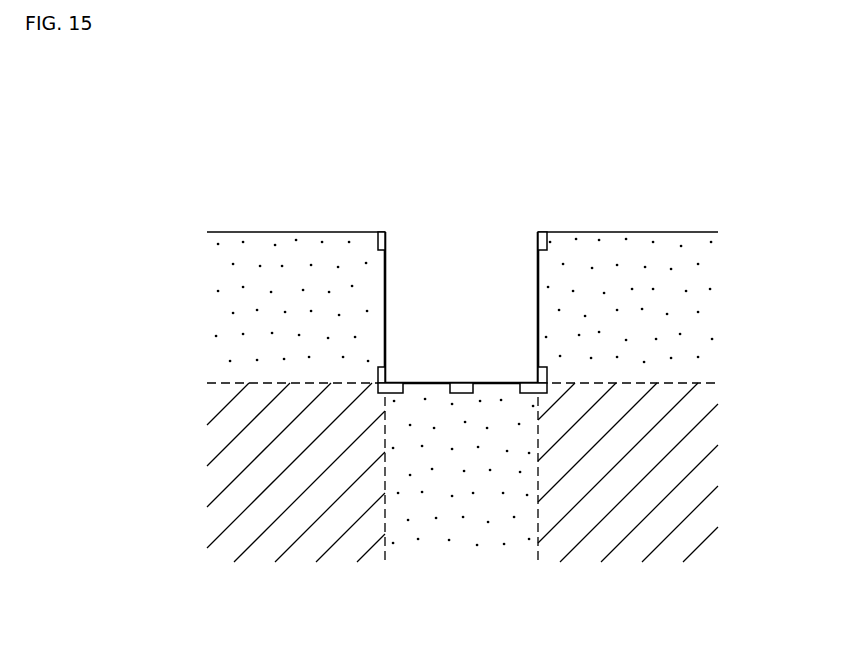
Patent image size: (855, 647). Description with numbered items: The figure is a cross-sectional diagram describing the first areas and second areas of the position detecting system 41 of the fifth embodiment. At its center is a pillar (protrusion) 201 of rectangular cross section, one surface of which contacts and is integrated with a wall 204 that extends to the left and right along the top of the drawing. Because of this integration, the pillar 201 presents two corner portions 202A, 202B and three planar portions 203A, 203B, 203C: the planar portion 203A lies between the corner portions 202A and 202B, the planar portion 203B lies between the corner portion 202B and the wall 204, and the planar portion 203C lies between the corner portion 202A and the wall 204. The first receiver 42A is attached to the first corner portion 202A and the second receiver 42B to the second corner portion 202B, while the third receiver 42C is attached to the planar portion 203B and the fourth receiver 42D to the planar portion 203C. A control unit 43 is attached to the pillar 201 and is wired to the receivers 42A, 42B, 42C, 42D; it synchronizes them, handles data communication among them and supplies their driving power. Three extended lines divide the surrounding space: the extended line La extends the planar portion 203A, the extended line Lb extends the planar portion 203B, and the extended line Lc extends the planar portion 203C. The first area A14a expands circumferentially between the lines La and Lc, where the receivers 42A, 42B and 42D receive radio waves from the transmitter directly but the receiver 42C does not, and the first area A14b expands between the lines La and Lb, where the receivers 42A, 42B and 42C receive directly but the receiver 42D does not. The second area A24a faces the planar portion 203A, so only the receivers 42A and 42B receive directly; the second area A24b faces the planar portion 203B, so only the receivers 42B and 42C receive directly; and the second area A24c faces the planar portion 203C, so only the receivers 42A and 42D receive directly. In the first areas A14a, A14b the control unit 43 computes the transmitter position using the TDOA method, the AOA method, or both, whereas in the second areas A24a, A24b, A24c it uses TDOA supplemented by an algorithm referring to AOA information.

The position detecting system 41 is at (471, 216).
The pillar (protrusion) 201 is at (488, 322).
The wall 204 is at (209, 235).
The planar portion 203A is at (430, 395).
The planar portion 203B is at (378, 305).
The planar portion 203C is at (547, 305).
The first corner portion 202A is at (547, 375).
The second corner portion 202B is at (378, 375).
The first receiver 42A is at (535, 394).
The second receiver 42B is at (388, 394).
The third receiver 42C is at (376, 241).
The fourth receiver 42D is at (548, 241).
The control unit 43 is at (475, 394).
The extended line La is at (207, 386).
The extended line Lb is at (383, 562).
The extended line Lc is at (540, 562).
The first area A14a is at (712, 488).
The first area A14b is at (215, 487).
The second area A24a is at (465, 560).
The second area A24b is at (216, 302).
The second area A24c is at (712, 303).